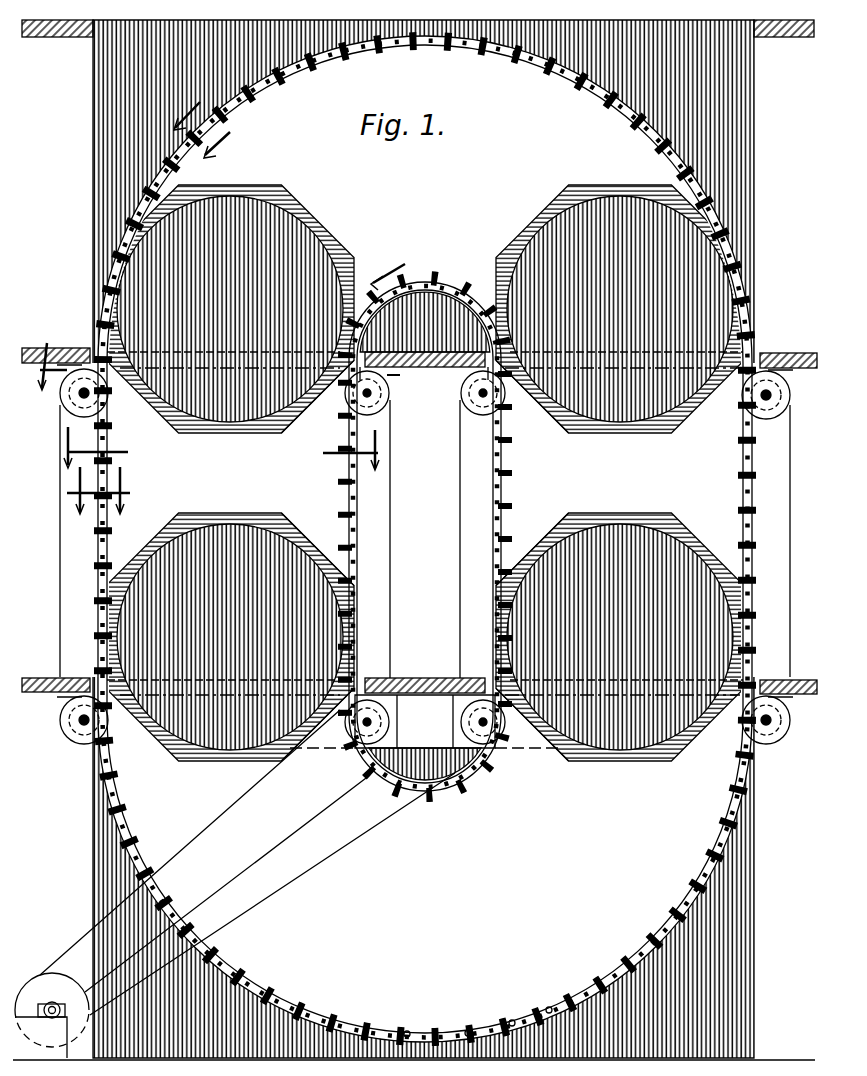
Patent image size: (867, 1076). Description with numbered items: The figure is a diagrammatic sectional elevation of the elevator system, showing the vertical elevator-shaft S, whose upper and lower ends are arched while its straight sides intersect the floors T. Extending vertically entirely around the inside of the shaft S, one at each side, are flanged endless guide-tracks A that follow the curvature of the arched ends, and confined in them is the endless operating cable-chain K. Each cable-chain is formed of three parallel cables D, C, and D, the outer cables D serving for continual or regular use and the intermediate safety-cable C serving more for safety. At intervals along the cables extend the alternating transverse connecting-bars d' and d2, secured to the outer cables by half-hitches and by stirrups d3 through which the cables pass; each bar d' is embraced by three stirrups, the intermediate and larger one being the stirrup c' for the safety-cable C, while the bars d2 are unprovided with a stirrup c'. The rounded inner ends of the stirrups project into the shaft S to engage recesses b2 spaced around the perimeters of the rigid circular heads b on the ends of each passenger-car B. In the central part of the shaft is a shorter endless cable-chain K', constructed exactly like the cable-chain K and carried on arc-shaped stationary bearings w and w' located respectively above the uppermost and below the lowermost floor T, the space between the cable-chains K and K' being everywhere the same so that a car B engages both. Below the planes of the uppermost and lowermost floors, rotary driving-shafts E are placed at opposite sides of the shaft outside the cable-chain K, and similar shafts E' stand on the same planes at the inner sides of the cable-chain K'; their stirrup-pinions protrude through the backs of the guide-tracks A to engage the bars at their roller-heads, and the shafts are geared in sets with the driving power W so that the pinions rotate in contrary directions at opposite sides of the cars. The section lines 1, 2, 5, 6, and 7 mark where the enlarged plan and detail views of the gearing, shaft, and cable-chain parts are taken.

The endless guide-track A is at (93, 150).
The passenger-car B is at (425, 473).
The circular head b is at (260, 190).
The recess b2 is at (337, 237).
The endless operating cable-chain K is at (425, 539).
The safety-cable C is at (510, 56).
The cable D is at (560, 76).
The endless cable-chain K' is at (425, 536).
The rotary driving-shaft E is at (419, 576).
The rotary driving-shaft E' is at (425, 558).
The floor T is at (419, 508).
The arc-shaped stationary bearing w is at (425, 300).
The arc-shaped stationary bearing w' is at (425, 765).
The driving power W is at (235, 884).
The elevator-shaft S is at (441, 881).
The section line 1 1 is at (218, 366).
The section line 2 2 is at (216, 448).
The section line 5 5 is at (100, 490).
The section line 6 6 is at (200, 129).
The section line 7 7 is at (388, 270).
The connecting-bar d' is at (398, 1009).
The connecting-bar d2 is at (468, 1030).
The stirrup c' is at (519, 988).
The stirrup d3 is at (549, 1008).